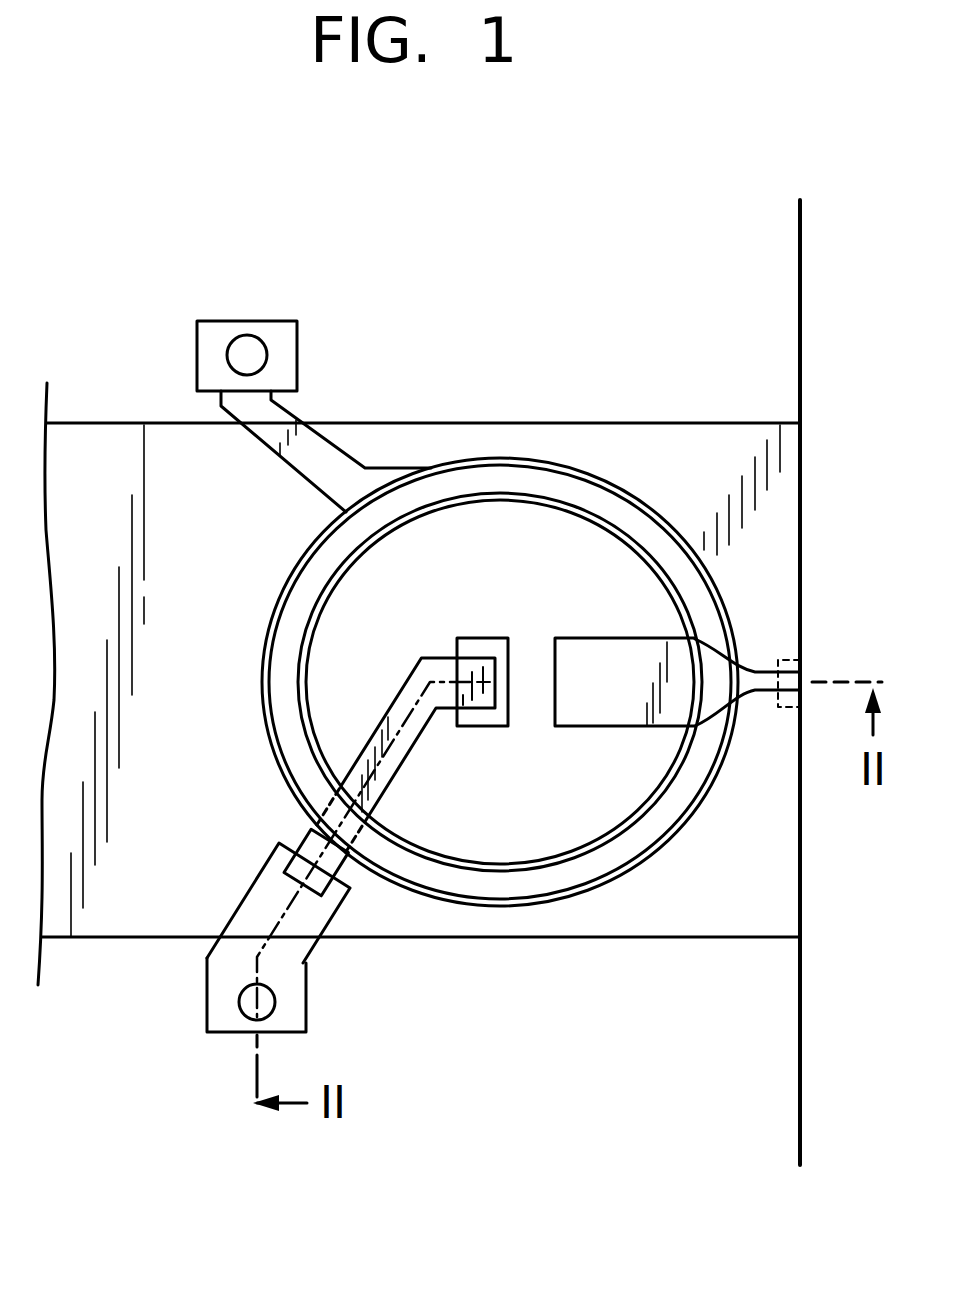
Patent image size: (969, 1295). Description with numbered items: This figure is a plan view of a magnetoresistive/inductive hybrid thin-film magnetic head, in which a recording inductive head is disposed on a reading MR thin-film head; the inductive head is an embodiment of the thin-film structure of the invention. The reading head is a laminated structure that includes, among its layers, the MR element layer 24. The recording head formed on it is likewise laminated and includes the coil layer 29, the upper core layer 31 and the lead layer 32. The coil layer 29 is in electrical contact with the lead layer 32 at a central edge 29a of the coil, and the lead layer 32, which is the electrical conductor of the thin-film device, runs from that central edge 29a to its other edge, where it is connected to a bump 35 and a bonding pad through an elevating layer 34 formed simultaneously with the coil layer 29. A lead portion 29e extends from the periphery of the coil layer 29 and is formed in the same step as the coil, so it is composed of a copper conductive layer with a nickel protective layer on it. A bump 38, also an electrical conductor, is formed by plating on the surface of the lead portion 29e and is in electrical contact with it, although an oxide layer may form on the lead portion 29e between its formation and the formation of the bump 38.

The MR element layer 24 is at (787, 657).
The coil layer 29 is at (297, 737).
The central edge 29a is at (490, 727).
The lead portion 29e is at (332, 458).
The upper core layer 31 is at (603, 694).
The lead layer 32 is at (402, 702).
The elevating layer 34 is at (272, 884).
The bump 35 is at (243, 1003).
The bump 38 is at (240, 352).